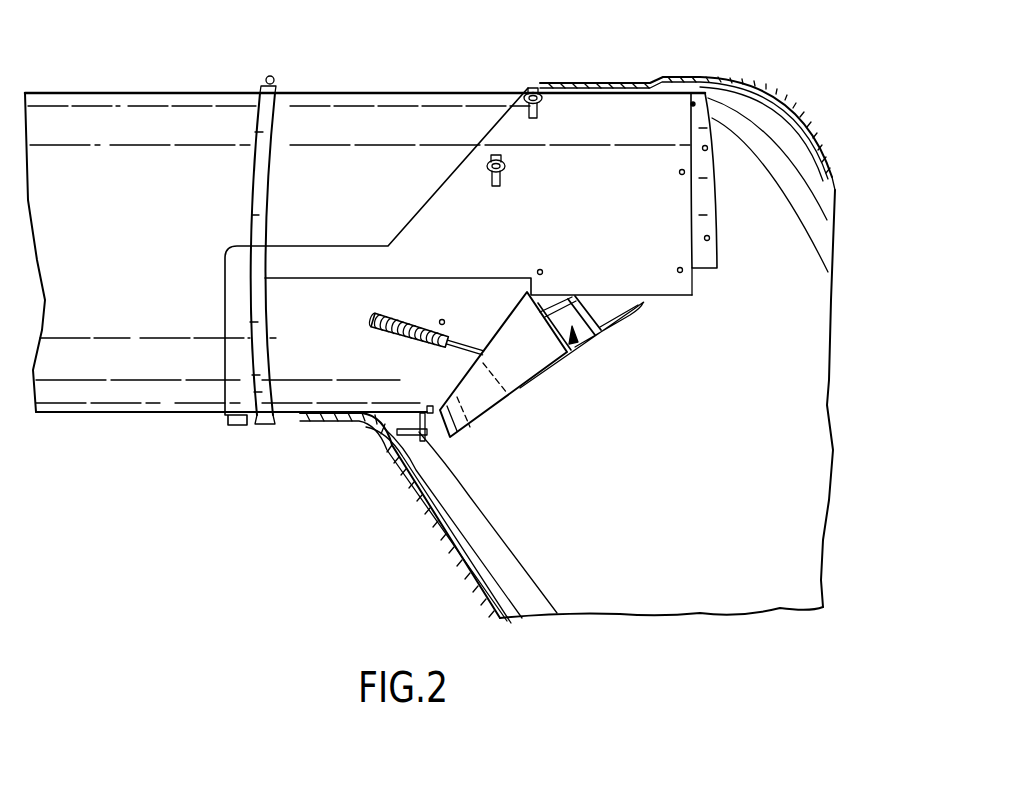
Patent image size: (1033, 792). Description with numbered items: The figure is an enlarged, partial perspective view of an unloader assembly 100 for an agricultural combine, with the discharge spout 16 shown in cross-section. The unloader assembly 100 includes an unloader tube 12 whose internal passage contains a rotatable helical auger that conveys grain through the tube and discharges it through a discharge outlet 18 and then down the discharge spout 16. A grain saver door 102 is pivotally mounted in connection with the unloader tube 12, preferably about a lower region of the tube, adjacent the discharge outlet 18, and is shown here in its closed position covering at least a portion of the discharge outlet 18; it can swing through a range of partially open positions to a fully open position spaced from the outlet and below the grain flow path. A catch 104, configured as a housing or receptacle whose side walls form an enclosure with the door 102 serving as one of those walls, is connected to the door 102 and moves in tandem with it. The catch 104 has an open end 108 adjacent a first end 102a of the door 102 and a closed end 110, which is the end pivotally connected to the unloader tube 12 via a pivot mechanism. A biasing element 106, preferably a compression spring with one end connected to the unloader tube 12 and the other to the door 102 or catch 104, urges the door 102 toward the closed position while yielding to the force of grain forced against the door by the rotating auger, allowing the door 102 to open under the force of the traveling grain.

The unloader assembly 100 is at (637, 68).
The unloader tube 12 is at (165, 413).
The discharge spout 16 is at (737, 75).
The discharge outlet 18 is at (701, 212).
The door 102 is at (603, 335).
The first end of the door 102a is at (567, 297).
The catch 104 is at (533, 380).
The biasing element 106 is at (405, 340).
The open end of the catch 108 is at (582, 343).
The closed end of the catch 110 is at (440, 427).